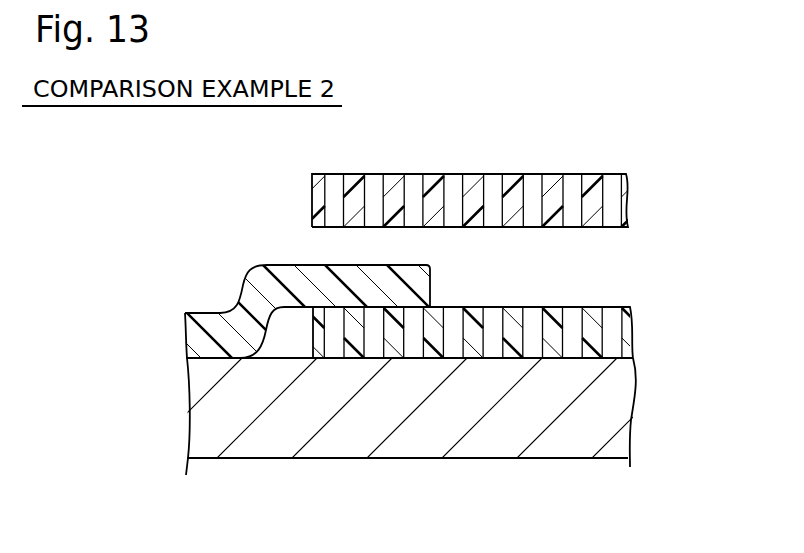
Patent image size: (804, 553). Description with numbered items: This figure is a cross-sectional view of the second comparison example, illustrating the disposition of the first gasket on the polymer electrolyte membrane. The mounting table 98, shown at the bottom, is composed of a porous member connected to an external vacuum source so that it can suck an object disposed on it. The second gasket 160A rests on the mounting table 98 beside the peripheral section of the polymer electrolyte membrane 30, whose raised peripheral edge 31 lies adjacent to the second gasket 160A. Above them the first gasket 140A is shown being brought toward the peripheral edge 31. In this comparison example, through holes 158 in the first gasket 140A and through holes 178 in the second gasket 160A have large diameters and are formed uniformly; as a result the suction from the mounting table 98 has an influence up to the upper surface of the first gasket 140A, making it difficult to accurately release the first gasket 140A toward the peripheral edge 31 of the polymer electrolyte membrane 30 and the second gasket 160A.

The polymer electrolyte membrane 30 is at (309, 297).
The peripheral edge 31 is at (402, 264).
The mounting table 98 is at (603, 422).
The first gasket 140A is at (473, 170).
The through holes 158 is at (500, 192).
The second gasket 160A is at (473, 312).
The through holes 178 is at (509, 312).